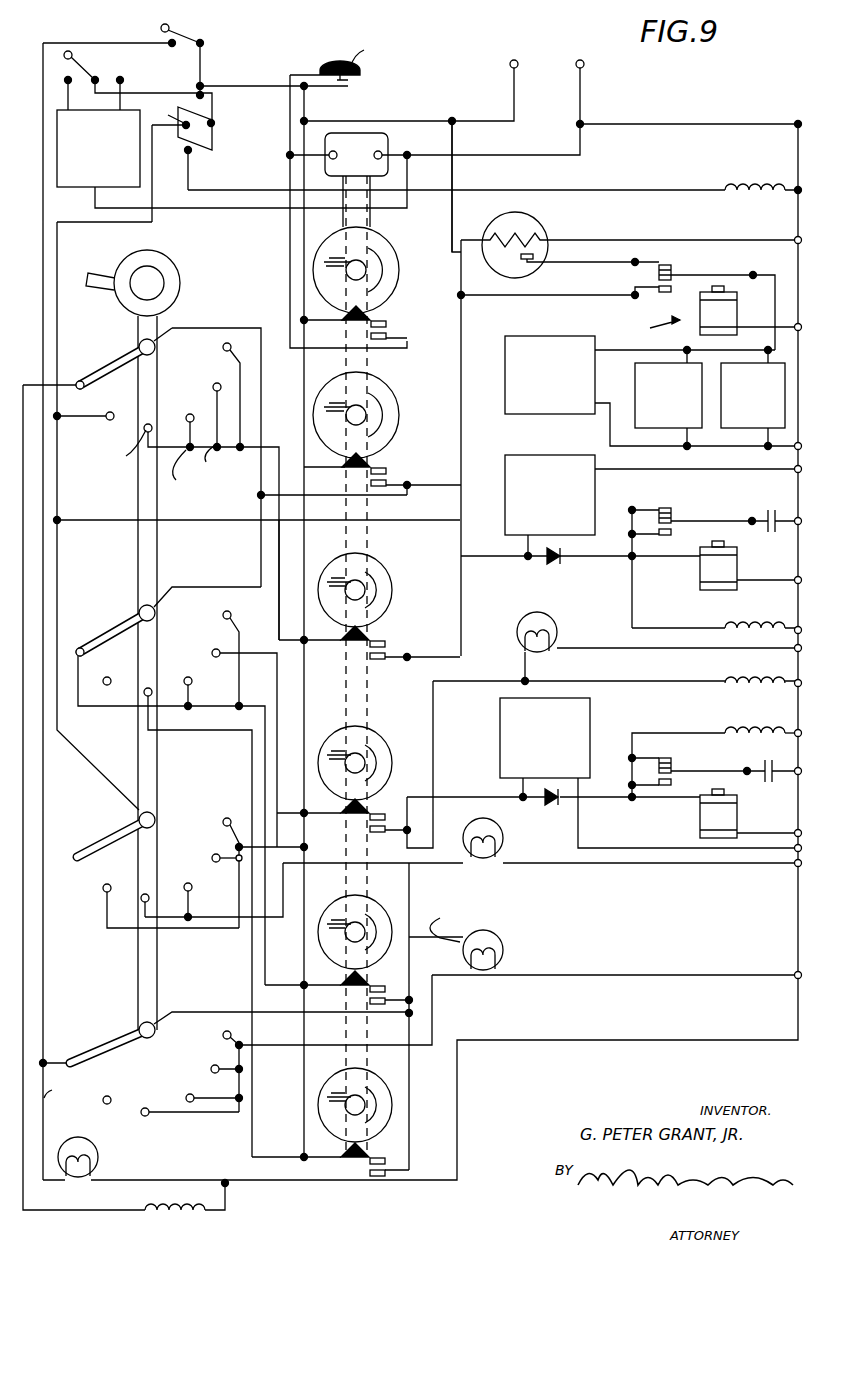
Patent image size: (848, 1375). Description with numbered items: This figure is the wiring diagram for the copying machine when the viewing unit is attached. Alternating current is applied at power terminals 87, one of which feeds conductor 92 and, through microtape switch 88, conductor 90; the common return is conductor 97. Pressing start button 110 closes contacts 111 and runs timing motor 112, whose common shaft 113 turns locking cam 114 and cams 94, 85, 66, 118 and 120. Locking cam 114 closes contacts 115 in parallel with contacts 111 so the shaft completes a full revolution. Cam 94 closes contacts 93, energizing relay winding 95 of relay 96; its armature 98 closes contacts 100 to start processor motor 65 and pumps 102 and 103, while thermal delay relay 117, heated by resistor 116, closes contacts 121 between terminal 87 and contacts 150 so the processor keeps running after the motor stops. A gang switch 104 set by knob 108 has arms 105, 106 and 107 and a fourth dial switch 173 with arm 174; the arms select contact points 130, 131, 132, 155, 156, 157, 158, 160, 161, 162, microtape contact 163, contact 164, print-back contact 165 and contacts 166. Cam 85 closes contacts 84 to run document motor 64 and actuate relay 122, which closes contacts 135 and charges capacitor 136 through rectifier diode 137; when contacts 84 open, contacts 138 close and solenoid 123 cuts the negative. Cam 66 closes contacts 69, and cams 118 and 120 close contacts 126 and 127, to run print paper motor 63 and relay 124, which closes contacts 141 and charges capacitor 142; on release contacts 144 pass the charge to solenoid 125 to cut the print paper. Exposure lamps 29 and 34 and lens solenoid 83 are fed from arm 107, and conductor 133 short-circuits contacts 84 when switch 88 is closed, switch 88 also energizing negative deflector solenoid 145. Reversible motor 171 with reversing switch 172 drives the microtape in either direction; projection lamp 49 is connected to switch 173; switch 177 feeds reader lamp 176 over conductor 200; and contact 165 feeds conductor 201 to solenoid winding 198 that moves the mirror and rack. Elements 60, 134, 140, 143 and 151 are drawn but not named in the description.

The exposure lamp 29 is at (516, 630).
The exposure lamp 34 is at (506, 840).
The projection lamp 49 is at (504, 944).
The A.C. supply 60 is at (546, 57).
The print paper motor 63 is at (496, 744).
The document motor 64 is at (510, 456).
The processor motor 65 is at (526, 326).
The cam 66 is at (385, 733).
The contacts 69 is at (383, 824).
The lens solenoid 83 is at (790, 680).
The contacts 84 is at (380, 640).
The cam 85 is at (392, 570).
The power terminals 87 is at (507, 65).
The microtape switch 88 is at (212, 118).
The conductor 90 is at (57, 262).
The conductor 92 is at (307, 375).
The contacts 93 is at (382, 467).
The cam 94 is at (392, 398).
The relay winding 95 is at (700, 328).
The relay 96 is at (649, 330).
The common conductor 97 is at (800, 278).
The armature 98 is at (736, 276).
The contacts 100 is at (668, 292).
The pump 102 is at (628, 390).
The pump 103 is at (785, 380).
The gang switch 104 is at (212, 286).
The rotatable arm 105 is at (114, 360).
The rotatable arm 106 is at (234, 816).
The rotatable arm 107 is at (102, 836).
The knob 108 is at (158, 255).
The start button 110 is at (341, 61).
The start contacts 111 is at (344, 89).
The timing motor 112 is at (388, 142).
The common shaft 113 is at (371, 226).
The locking cam 114 is at (396, 262).
The contacts 115 is at (382, 320).
The heater 116 is at (535, 225).
The thermal delay relay 117 is at (498, 218).
The cam 118 is at (324, 905).
The cam 120 is at (316, 1112).
The contacts 121 is at (530, 270).
The relay 122 is at (709, 493).
The solenoid 123 is at (729, 632).
The second relay 124 is at (677, 812).
The solenoid 125 is at (754, 746).
The contacts 126 is at (390, 980).
The contacts 127 is at (388, 1158).
The contact point 130 is at (192, 416).
The contact point 131 is at (192, 678).
The contact point 132 is at (196, 880).
The conductor 133 is at (178, 528).
The relay solenoid 134 is at (740, 560).
The contacts 135 is at (671, 528).
The capacitor 136 is at (786, 492).
The rectifier diode 137 is at (568, 564).
The contacts 138 is at (663, 508).
The relay solenoid 140 is at (706, 828).
The contacts 141 is at (666, 782).
The capacitor 142 is at (766, 786).
The diode 143 is at (545, 805).
The contacts 144 is at (666, 762).
The negative deflector solenoid 145 is at (730, 205).
The contacts 150 is at (664, 262).
The conductor 151 is at (452, 184).
The contact 155 is at (220, 390).
The contact point 156 is at (218, 650).
The contact point 157 is at (214, 856).
The contact 158 is at (232, 343).
The contact 160 is at (114, 620).
The contact point 161 is at (226, 614).
The contact point 162 is at (146, 688).
The microtape contact 163 is at (102, 416).
The contact 164 is at (102, 888).
The print-back contact 165 is at (72, 384).
The contacts 166 is at (78, 648).
The reversible motor 171 is at (56, 144).
The reversing switch 172 is at (83, 66).
The fourth dial switch 173 is at (87, 1020).
The rotating arm 174 is at (124, 1028).
The reader lamp 176 is at (86, 1122).
The switch 177 is at (185, 35).
The solenoid winding 198 is at (150, 1218).
The conductor 200 is at (43, 210).
The conductor 201 is at (20, 1212).